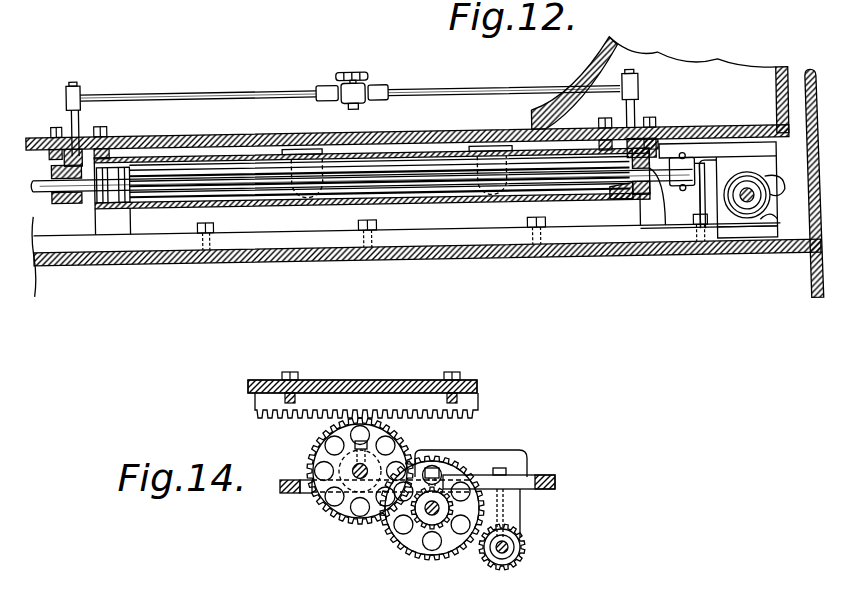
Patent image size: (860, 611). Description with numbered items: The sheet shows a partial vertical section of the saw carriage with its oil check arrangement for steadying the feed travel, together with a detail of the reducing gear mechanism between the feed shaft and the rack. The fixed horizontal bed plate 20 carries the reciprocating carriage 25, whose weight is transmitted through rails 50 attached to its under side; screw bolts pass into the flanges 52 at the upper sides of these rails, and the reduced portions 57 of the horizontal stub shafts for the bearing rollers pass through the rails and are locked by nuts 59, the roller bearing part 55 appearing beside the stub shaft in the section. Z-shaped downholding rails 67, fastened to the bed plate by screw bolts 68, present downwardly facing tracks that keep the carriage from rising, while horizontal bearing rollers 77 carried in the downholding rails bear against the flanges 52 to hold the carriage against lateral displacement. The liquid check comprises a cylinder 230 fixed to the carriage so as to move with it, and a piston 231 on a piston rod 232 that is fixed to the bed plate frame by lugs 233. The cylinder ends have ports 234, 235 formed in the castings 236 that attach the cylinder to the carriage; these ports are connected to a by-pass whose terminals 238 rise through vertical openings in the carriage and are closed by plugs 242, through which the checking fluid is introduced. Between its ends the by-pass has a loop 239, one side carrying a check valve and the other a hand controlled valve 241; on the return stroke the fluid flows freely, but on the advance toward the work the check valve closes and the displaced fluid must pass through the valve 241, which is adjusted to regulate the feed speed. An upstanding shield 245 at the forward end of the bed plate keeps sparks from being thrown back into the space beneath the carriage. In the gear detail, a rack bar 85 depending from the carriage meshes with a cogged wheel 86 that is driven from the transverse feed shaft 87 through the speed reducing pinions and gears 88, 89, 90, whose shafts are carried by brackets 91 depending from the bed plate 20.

In FIG. 12, the bed plate 20 is at (478, 261).
In FIG. 12, the carriage 25 is at (268, 128).
In FIG. 14, the carriage 25 is at (347, 380).
In FIG. 12, the rails 50 is at (722, 218).
In FIG. 12, the flanges 52 is at (750, 155).
In FIG. 12, the bearing boss 55 is at (780, 197).
In FIG. 12, the reduced portions 57 is at (766, 211).
In FIG. 12, the nuts 59 is at (742, 206).
In FIG. 12, the downholding rails 67 is at (178, 208).
In FIG. 12, the screw bolts 68 is at (216, 222).
In FIG. 12, the horizontal bearing rollers 77 is at (473, 153).
In FIG. 14, the rack bar 85 is at (478, 398).
In FIG. 14, the cogged wheel 86 is at (336, 510).
In FIG. 14, the feed shaft 87 is at (509, 550).
In FIG. 14, the speed reducing pinion 88 is at (527, 549).
In FIG. 14, the speed reducing gear 89 is at (446, 553).
In FIG. 14, the speed reducing pinion 90 is at (424, 521).
In FIG. 14, the brackets 91 is at (521, 507).
In FIG. 12, the cylinder 230 is at (327, 200).
In FIG. 12, the piston 231 is at (151, 88).
In FIG. 12, the piston rod 232 is at (588, 186).
In FIG. 12, the lugs 233 is at (678, 194).
In FIG. 12, the port 234 is at (67, 126).
In FIG. 12, the port 235 is at (657, 137).
In FIG. 12, the castings 236 is at (78, 202).
In FIG. 12, the terminals 238 is at (85, 122).
In FIG. 12, the loop 239 is at (328, 82).
In FIG. 12, the hand controlled valve 241 is at (368, 75).
In FIG. 12, the plugs 242 is at (75, 76).
In FIG. 12, the shield 245 is at (808, 78).